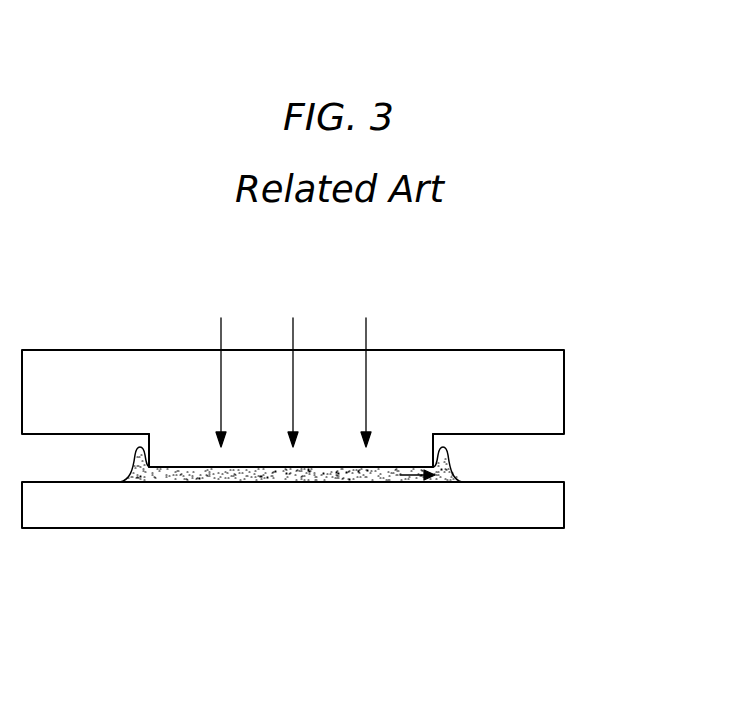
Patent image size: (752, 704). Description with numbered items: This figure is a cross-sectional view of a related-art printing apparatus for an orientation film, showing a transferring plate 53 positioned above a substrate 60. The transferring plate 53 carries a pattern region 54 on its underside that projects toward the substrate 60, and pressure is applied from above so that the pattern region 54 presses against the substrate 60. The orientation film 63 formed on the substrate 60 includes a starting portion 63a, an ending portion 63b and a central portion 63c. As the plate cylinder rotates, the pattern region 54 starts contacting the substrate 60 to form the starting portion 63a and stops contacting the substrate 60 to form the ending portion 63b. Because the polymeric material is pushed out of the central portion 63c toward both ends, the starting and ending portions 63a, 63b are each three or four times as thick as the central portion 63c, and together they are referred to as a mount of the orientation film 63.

The transferring plate 53 is at (465, 377).
The pattern region 54 is at (418, 450).
The substrate 60 is at (550, 507).
The orientation film 63 is at (291, 557).
The starting portion 63a is at (143, 460).
The ending portion 63b is at (440, 460).
The central portion 63c is at (283, 472).